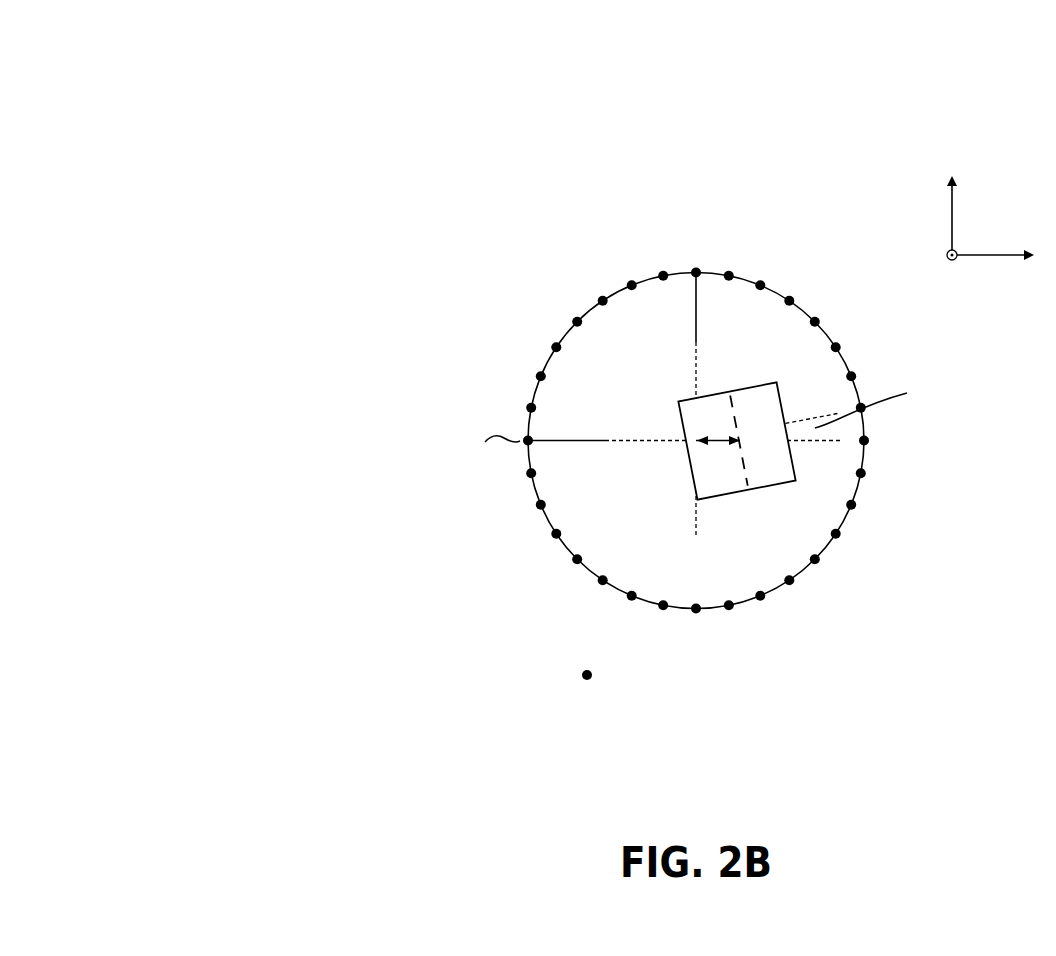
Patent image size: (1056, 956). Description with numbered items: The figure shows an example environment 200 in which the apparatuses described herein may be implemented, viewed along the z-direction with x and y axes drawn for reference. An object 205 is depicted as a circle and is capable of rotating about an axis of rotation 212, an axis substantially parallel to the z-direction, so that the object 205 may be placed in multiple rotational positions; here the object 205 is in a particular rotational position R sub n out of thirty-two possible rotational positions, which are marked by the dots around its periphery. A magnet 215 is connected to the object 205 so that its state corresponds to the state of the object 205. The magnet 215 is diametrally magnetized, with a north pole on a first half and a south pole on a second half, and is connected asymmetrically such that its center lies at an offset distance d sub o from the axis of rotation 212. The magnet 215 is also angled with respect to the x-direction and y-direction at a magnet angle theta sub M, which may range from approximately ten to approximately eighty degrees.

The environment 200 is at (250, 63).
The object 205 is at (696, 441).
The axis of rotation 212 is at (694, 442).
The magnet 215 is at (749, 462).